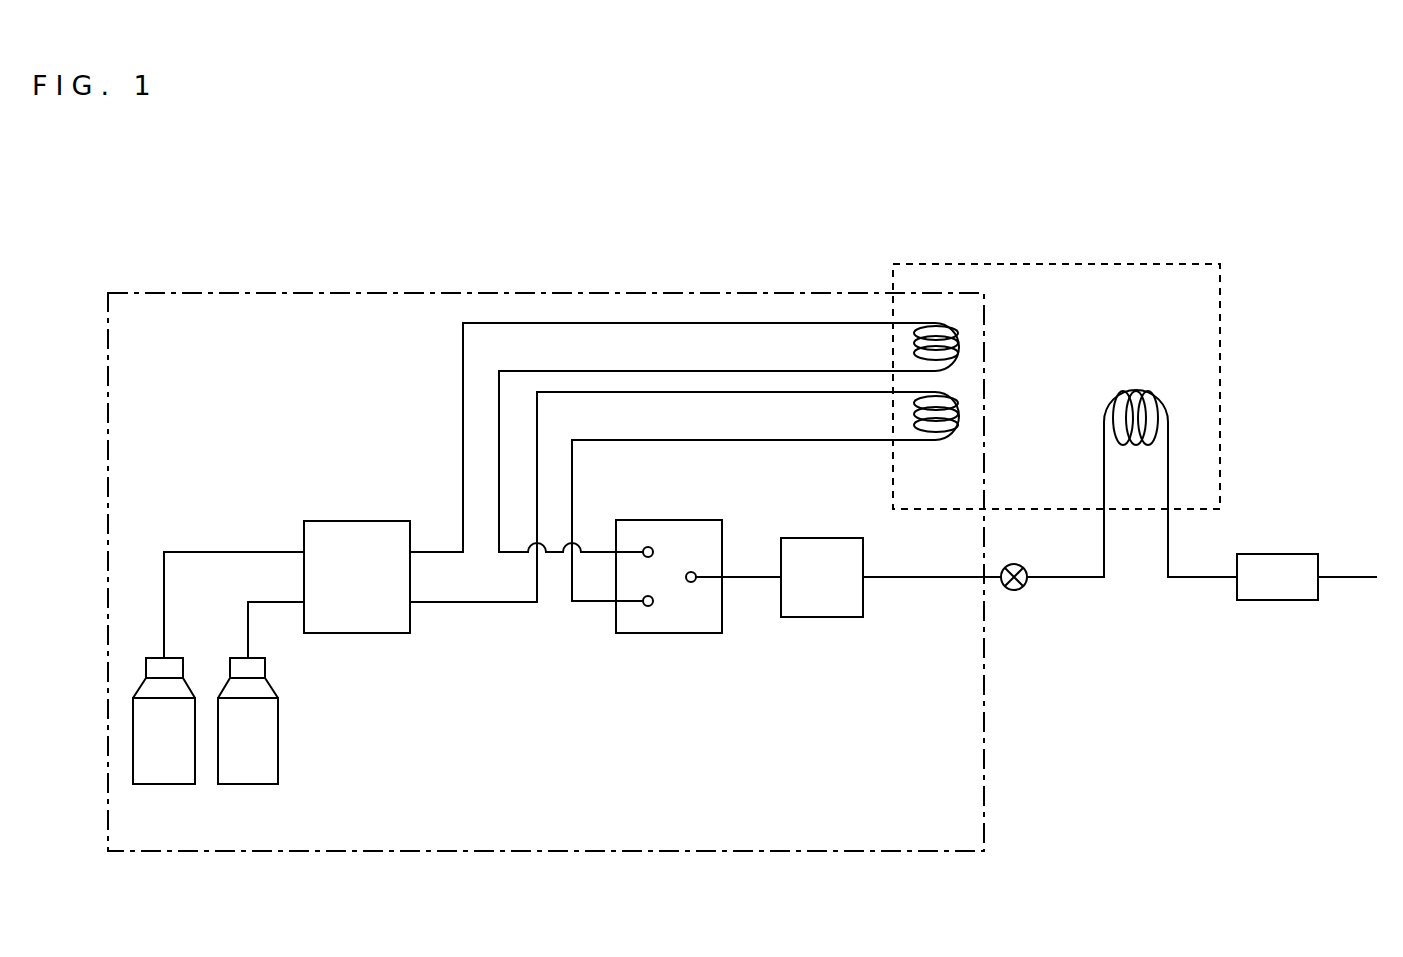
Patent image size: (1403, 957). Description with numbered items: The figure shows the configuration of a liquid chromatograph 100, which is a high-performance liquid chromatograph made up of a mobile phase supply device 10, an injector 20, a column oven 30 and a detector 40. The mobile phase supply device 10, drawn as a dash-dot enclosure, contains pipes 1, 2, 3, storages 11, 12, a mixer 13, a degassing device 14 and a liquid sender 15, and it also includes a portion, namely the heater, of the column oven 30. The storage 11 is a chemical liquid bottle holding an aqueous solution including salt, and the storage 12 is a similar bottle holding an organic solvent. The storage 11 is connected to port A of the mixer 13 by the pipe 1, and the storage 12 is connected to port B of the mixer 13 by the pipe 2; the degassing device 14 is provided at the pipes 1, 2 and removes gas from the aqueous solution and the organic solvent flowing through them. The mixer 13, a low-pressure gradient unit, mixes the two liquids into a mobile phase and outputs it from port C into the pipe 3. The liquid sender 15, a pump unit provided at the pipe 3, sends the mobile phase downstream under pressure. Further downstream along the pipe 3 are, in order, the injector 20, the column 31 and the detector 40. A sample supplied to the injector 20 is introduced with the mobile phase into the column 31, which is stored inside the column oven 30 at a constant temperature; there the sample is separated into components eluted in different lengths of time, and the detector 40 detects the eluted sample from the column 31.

The liquid chromatograph 100 is at (1402, 186).
The mobile phase supply device 10 is at (543, 293).
The storage 11 is at (165, 787).
The storage 12 is at (248, 787).
The mixer 13 is at (670, 520).
The degassing device 14 is at (357, 521).
The liquid sender 15 is at (822, 538).
The pipe 1 is at (717, 371).
The pipe 2 is at (717, 440).
The pipe 3 is at (757, 578).
The injector 20 is at (1015, 565).
The column oven 30 is at (1058, 264).
The column 31 is at (1135, 392).
The detector 40 is at (1278, 554).